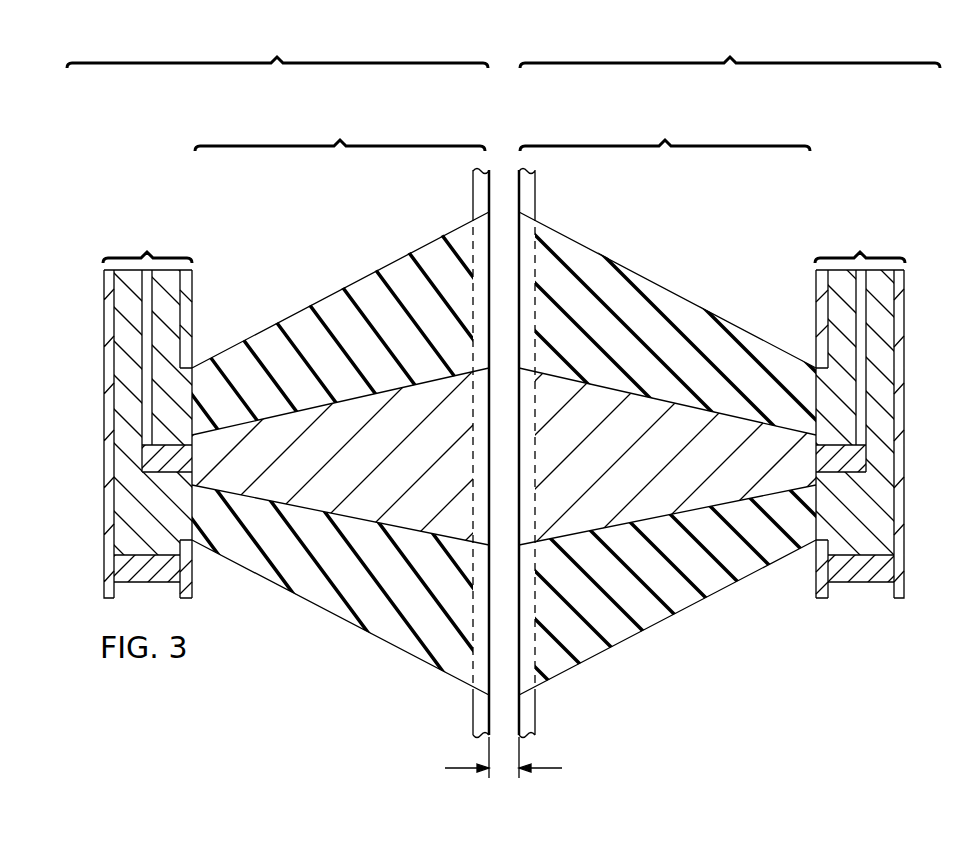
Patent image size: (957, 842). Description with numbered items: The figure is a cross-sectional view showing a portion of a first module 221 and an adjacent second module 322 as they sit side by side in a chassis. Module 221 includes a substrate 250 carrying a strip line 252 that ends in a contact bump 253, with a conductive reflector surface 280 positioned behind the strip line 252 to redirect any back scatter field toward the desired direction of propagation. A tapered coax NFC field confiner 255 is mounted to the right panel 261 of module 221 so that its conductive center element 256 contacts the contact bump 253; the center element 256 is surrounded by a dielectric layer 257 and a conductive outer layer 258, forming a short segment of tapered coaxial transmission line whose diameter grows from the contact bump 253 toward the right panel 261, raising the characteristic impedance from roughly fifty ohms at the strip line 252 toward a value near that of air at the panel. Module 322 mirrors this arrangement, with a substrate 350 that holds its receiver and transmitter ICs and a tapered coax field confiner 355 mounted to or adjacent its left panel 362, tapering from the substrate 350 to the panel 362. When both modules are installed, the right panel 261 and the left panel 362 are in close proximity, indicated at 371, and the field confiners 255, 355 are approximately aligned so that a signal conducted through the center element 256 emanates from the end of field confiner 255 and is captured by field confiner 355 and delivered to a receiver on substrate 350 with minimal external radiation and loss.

The module 221 is at (277, 48).
The second module 322 is at (730, 48).
The NFC field confiner 255 is at (340, 120).
The tapered coax field confiner 355 is at (488, 394).
The substrate 250 is at (478, 436).
The substrate 350 is at (478, 423).
The conductive reflector surface 280 is at (107, 300).
The strip line 252 is at (148, 378).
The contact bump 253 is at (150, 458).
The conductive center element 256 is at (318, 472).
The dielectric layer 257 is at (318, 575).
The conductive outer layer 258 is at (367, 633).
The right panel 261 is at (473, 708).
The left panel 362 is at (535, 708).
The close proximity 371 is at (464, 768).